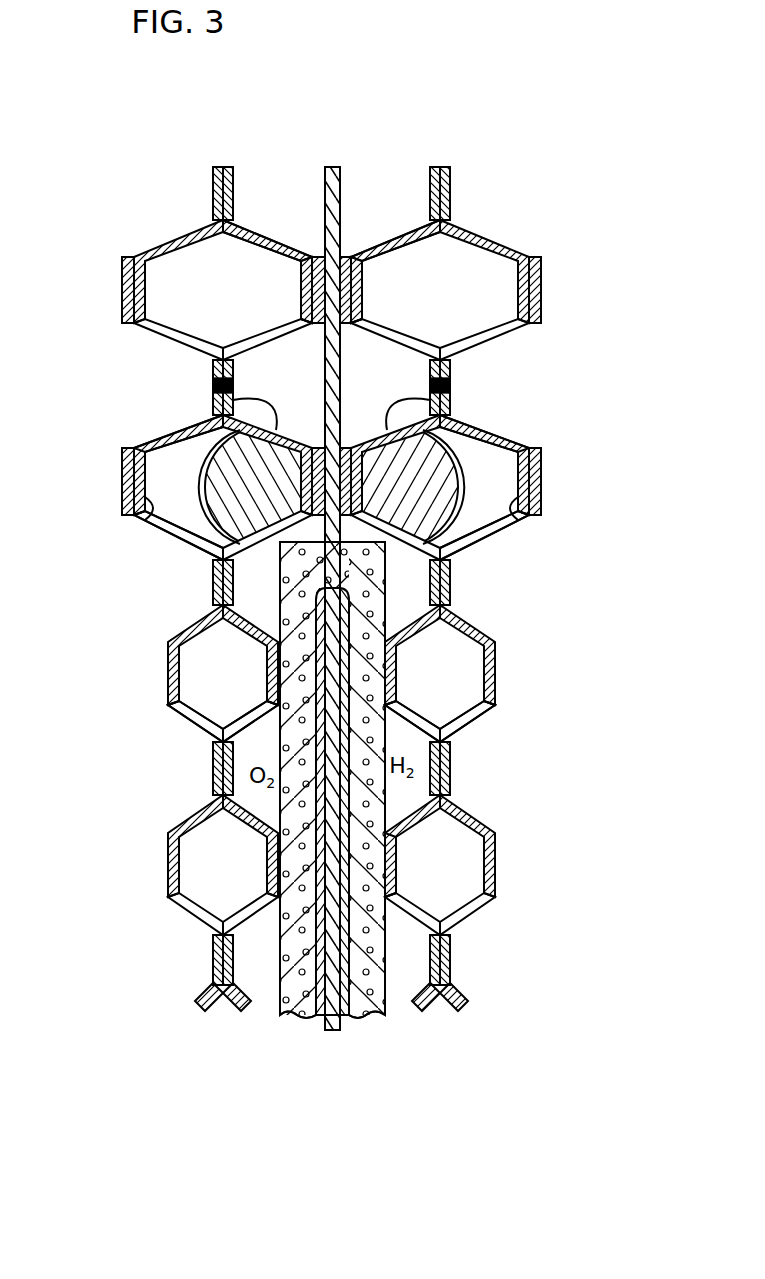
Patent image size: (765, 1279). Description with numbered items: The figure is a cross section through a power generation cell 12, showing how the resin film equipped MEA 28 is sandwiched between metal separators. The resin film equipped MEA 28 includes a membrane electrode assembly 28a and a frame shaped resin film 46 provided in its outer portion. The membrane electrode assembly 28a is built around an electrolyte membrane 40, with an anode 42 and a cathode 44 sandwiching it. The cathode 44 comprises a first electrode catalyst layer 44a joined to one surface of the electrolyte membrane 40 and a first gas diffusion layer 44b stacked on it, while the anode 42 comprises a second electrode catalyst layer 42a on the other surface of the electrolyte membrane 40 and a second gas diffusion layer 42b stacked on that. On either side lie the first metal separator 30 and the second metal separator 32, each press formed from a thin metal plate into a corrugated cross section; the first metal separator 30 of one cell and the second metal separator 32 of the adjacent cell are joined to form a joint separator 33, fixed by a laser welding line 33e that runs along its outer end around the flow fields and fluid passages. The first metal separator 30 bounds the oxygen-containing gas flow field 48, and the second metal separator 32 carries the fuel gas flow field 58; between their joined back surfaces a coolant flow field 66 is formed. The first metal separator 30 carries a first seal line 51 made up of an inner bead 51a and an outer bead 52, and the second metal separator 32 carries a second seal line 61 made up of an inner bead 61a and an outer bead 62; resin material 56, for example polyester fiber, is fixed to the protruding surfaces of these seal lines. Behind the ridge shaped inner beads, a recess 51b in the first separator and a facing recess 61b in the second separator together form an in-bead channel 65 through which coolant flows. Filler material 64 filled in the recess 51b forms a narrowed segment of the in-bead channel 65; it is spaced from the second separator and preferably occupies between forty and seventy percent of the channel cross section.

The power generation cell 12 is at (562, 820).
The resin film equipped MEA 28 is at (394, 856).
The membrane electrode assembly 28a is at (272, 1088).
The first metal separator 30 is at (258, 228).
The second metal separator 32 is at (205, 225).
The joint separator 33 is at (285, 128).
The laser welding line 33e is at (213, 385).
The electrolyte membrane 40 is at (333, 1034).
The anode 42 is at (368, 1022).
The second electrode catalyst layer 42a is at (465, 626).
The second gas diffusion layer 42b is at (386, 672).
The cathode 44 is at (297, 1022).
The first electrode catalyst layer 44a is at (322, 666).
The first gas diffusion layer 44b is at (290, 649).
The resin film 46 is at (327, 167).
The oxygen-containing gas flow field 48 is at (234, 758).
The first seal line 51 is at (273, 230).
The inner bead 51a is at (233, 400).
The recess 51b is at (200, 440).
The outer bead 52 is at (289, 249).
The resin material 56 is at (122, 291).
The fuel gas flow field 58 is at (420, 786).
The second seal line 61 is at (390, 230).
The inner bead 61a is at (165, 533).
The recess 61b is at (147, 511).
The outer bead 62 is at (372, 249).
The filler material 64 is at (270, 481).
The in-bead channel 65 is at (190, 517).
The coolant flow field 66 is at (212, 696).